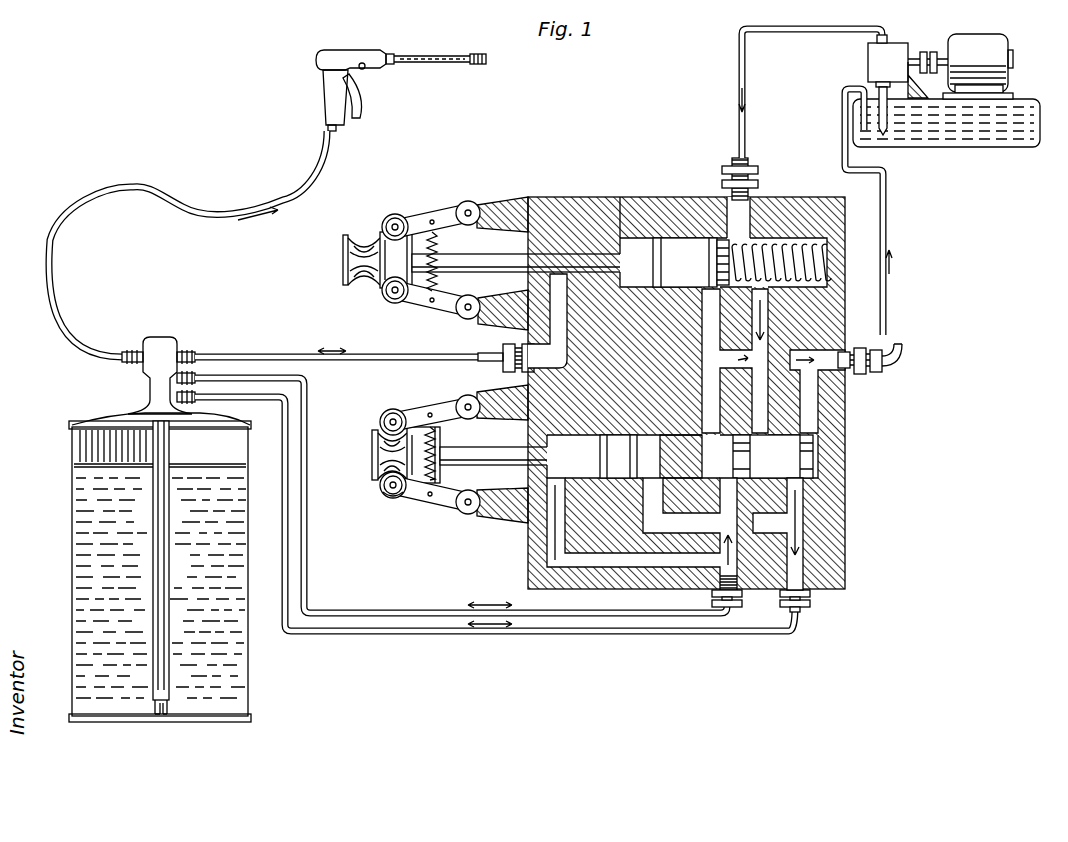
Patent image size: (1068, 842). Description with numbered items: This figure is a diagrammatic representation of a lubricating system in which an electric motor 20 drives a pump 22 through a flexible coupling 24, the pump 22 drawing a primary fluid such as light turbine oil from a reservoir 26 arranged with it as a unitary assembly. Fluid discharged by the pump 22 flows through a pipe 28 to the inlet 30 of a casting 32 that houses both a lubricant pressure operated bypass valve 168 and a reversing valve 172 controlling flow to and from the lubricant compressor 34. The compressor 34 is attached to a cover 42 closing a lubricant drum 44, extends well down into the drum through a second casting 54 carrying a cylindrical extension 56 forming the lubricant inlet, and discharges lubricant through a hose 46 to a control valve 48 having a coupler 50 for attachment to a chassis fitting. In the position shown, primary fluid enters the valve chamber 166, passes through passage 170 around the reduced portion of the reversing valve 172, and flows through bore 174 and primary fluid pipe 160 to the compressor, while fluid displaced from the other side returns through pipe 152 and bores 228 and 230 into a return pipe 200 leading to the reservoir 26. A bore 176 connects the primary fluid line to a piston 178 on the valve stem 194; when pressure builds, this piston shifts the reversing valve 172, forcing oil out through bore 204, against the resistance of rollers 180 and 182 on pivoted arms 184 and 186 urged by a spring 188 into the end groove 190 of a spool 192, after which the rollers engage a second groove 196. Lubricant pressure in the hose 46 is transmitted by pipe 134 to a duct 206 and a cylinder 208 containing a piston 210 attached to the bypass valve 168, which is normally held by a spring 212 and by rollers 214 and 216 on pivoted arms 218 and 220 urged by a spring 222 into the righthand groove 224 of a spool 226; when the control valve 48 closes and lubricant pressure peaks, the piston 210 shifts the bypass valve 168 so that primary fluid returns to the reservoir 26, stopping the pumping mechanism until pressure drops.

The electric motor 20 is at (1010, 78).
The pump 22 is at (890, 40).
The flexible coupling 24 is at (932, 52).
The reservoir 26 is at (990, 134).
The pipe 28 is at (740, 90).
The inlet 30 is at (738, 212).
The casting 32 is at (590, 245).
The lubricant compressor 34 is at (158, 337).
The cover 42 is at (108, 424).
The lubricant drum 44 is at (250, 662).
The hose 46 is at (50, 236).
The control valve 48 is at (350, 58).
The coupler 50 is at (470, 64).
The second casting 54 is at (162, 688).
The cylindrical extension 56 is at (165, 710).
The pipe 134 is at (296, 360).
The pipe 152 is at (405, 612).
The primary fluid pipe 160 is at (402, 636).
The valve chamber 166 is at (782, 240).
The bypass valve 168 is at (668, 250).
The passage 170 is at (770, 312).
The reversing valve 172 is at (826, 448).
The bore 174 is at (803, 552).
The bore 176 is at (690, 568).
The piston 178 is at (626, 476).
The roller 180 is at (386, 500).
The roller 182 is at (396, 410).
The pivoted arm 184 is at (456, 512).
The pivoted arm 186 is at (448, 404).
The spring 188 is at (445, 437).
The end groove 190 is at (382, 486).
The spool 192 is at (375, 455).
The valve stem 194 is at (513, 458).
The second groove 196 is at (386, 494).
The return pipe 200 is at (893, 272).
The bore 204 is at (556, 562).
The duct 206 is at (527, 350).
The cylinder 208 is at (533, 222).
The piston 210 is at (558, 250).
The spring 212 is at (845, 244).
The roller 214 is at (382, 294).
The roller 216 is at (398, 214).
The pivoted arm 218 is at (404, 308).
The pivoted arm 220 is at (442, 212).
The spring 222 is at (440, 282).
The righthand groove 224 is at (386, 250).
The spool 226 is at (343, 240).
The bore 228 is at (798, 336).
The bore 230 is at (775, 380).